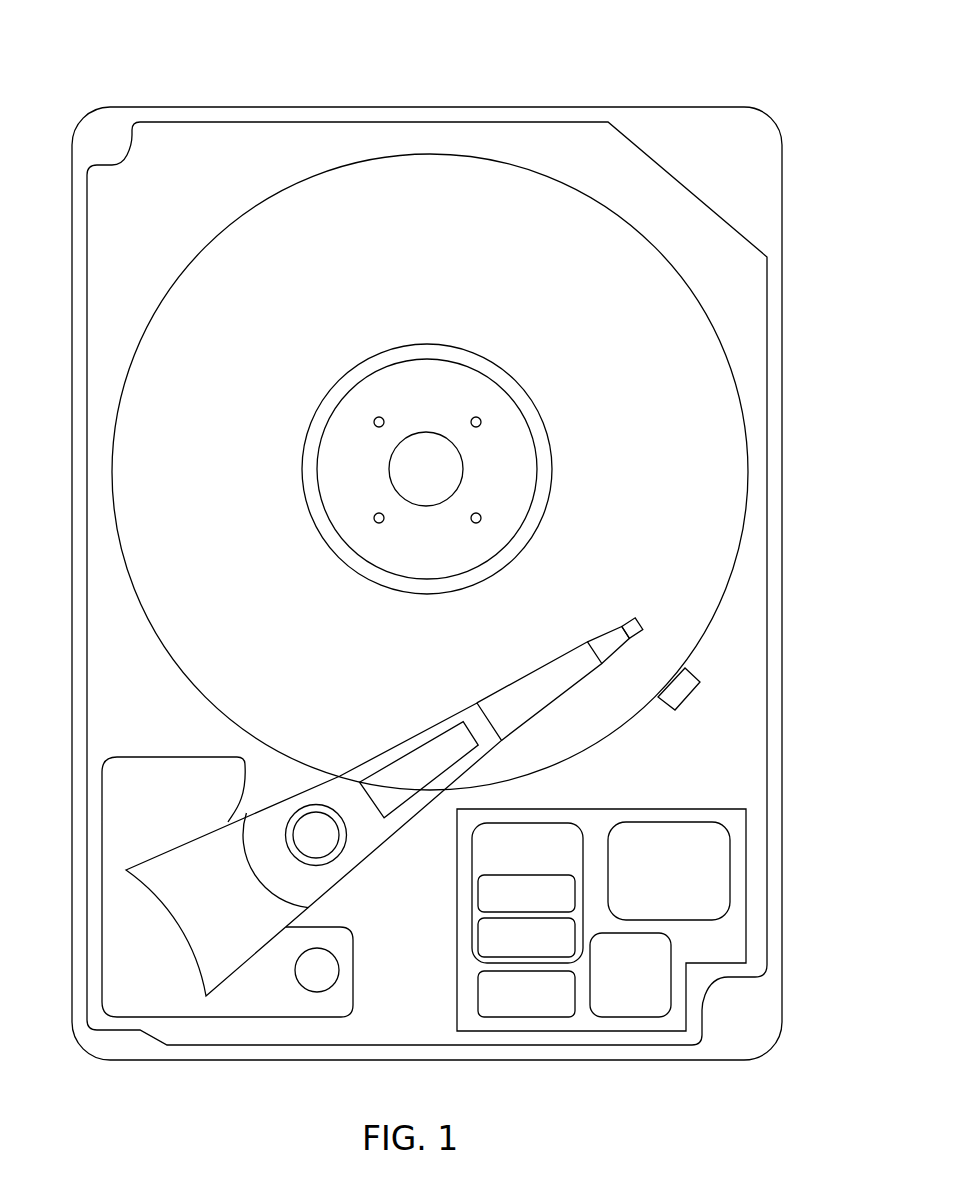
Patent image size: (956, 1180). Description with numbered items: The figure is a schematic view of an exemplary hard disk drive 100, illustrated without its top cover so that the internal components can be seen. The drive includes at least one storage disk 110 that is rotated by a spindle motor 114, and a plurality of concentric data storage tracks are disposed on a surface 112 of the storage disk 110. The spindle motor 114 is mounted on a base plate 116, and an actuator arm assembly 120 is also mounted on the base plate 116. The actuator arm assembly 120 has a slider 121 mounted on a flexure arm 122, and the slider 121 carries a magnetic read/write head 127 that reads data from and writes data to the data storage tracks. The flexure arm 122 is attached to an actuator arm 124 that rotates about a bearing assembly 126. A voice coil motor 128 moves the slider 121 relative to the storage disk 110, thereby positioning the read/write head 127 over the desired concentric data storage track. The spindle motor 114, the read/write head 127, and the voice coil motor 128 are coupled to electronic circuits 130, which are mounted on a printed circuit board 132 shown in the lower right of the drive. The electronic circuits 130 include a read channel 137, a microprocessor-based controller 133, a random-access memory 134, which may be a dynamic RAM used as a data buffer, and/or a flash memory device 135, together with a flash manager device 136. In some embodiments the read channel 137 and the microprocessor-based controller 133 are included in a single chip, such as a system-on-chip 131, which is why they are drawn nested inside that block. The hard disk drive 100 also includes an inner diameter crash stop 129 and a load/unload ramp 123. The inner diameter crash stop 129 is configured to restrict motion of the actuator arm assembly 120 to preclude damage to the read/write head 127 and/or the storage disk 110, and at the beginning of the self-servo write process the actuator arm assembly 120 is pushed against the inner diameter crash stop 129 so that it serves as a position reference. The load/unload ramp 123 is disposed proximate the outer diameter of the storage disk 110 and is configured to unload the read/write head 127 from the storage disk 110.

The hard disk drive 100 is at (168, 80).
The storage disk 110 is at (203, 247).
The surface 112 is at (234, 452).
The spindle motor 114 is at (523, 410).
The base plate 116 is at (768, 608).
The actuator arm assembly 120 is at (422, 724).
The slider 121 is at (637, 625).
The flexure arm 122 is at (602, 633).
The load/unload ramp 123 is at (693, 702).
The actuator arm 124 is at (500, 683).
The bearing assembly 126 is at (332, 863).
The magnetic read/write head 127 is at (630, 607).
The voice coil motor 128 is at (355, 958).
The inner diameter crash stop 129 is at (318, 993).
The electronic circuits 130 is at (605, 876).
The system-on-chip 131 is at (546, 866).
The printed circuit board 132 is at (682, 807).
The microprocessor-based controller 133 is at (546, 907).
The random-access memory 134 is at (546, 1007).
The flash memory device 135 is at (690, 886).
The flash manager device 136 is at (650, 989).
The read channel 137 is at (546, 951).